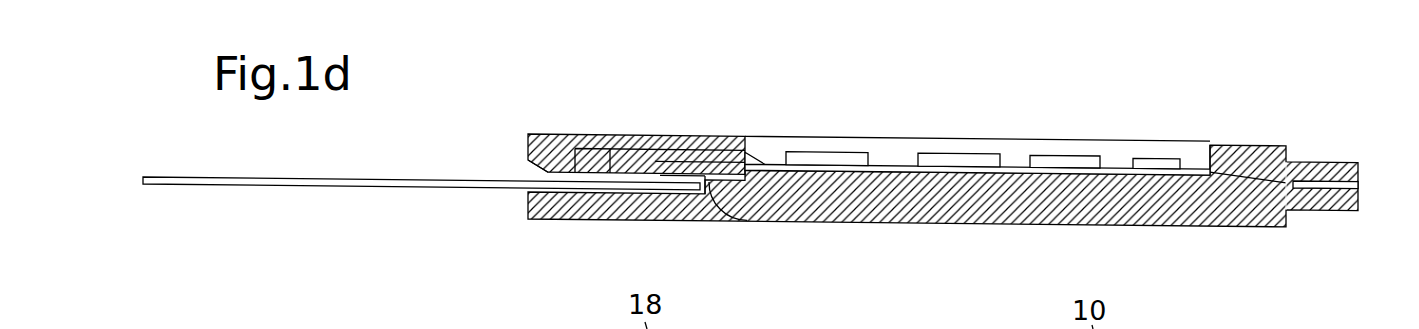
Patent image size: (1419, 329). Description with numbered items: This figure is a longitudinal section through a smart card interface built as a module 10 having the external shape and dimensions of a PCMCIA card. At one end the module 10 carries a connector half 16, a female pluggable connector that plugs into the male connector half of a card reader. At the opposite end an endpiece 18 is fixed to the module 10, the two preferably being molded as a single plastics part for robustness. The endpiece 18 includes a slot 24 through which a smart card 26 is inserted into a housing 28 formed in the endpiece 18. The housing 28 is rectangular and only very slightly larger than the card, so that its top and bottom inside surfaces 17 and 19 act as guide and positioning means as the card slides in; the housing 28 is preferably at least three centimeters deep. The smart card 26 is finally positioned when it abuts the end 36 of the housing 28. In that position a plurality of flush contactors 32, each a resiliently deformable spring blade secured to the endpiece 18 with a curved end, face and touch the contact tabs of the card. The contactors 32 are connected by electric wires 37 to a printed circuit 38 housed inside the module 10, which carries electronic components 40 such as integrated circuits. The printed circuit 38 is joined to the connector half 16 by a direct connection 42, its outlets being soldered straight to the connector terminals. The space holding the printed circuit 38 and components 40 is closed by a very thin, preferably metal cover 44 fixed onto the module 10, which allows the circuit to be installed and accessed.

The module 10 is at (897, 127).
The connector half 16 is at (1330, 163).
The top inside surface of the housing 17 is at (592, 135).
The endpiece 18 is at (557, 131).
The bottom inside surface of the housing 19 is at (675, 180).
The slot 24 is at (528, 171).
The smart card 26 is at (278, 178).
The housing 28 is at (573, 190).
The flush contactors 32 is at (655, 178).
The end of the housing 36 is at (745, 220).
The electric wires 37 is at (718, 152).
The printed circuit 38 is at (1012, 167).
The electronic components 40 is at (838, 151).
The direct connection 42 is at (1245, 180).
The cover 44 is at (942, 138).